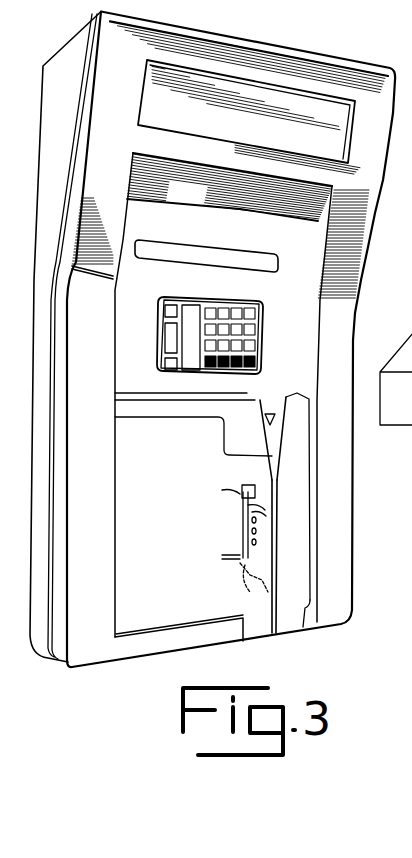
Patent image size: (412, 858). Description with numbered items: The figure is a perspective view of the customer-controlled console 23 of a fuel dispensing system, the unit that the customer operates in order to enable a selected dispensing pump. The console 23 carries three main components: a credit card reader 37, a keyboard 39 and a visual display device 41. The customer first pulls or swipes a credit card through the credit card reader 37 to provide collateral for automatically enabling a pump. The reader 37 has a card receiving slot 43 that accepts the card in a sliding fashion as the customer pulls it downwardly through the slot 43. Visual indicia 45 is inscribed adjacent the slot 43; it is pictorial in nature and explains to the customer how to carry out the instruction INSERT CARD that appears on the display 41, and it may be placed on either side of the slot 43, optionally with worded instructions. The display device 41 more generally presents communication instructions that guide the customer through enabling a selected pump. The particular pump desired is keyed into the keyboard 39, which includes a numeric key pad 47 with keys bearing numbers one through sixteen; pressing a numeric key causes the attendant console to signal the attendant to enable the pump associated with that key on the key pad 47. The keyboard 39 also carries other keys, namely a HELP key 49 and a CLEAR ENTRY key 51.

The customer-controlled console 23 is at (393, 71).
The visual display device 41 is at (277, 263).
The keyboard 39 is at (238, 329).
The HELP key 49 is at (165, 308).
The CLEAR ENTRY key 51 is at (165, 365).
The numeric key pad 47 is at (264, 317).
The credit card reader 37 is at (278, 498).
The card receiving slot 43 is at (274, 566).
The visual indicia 45 is at (232, 534).